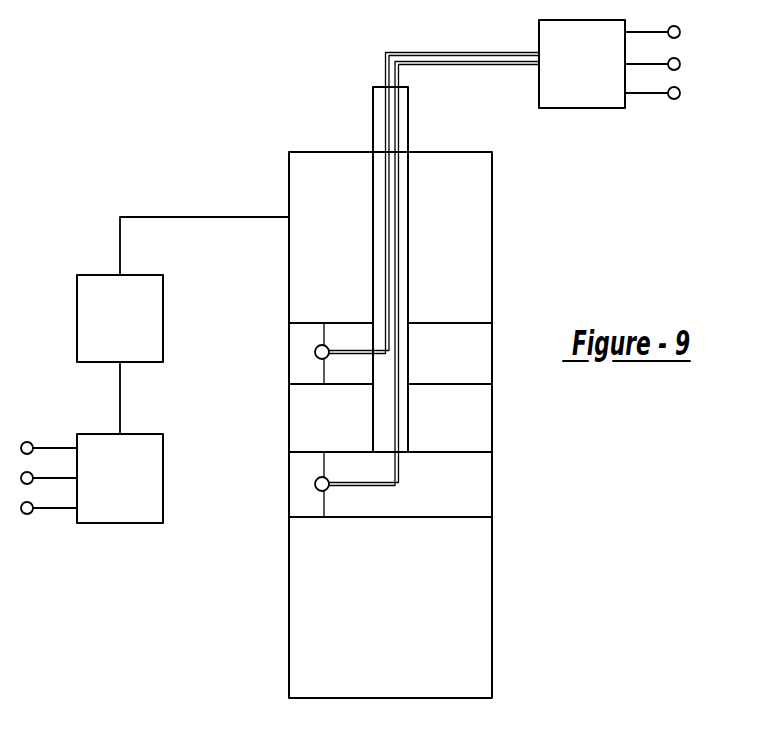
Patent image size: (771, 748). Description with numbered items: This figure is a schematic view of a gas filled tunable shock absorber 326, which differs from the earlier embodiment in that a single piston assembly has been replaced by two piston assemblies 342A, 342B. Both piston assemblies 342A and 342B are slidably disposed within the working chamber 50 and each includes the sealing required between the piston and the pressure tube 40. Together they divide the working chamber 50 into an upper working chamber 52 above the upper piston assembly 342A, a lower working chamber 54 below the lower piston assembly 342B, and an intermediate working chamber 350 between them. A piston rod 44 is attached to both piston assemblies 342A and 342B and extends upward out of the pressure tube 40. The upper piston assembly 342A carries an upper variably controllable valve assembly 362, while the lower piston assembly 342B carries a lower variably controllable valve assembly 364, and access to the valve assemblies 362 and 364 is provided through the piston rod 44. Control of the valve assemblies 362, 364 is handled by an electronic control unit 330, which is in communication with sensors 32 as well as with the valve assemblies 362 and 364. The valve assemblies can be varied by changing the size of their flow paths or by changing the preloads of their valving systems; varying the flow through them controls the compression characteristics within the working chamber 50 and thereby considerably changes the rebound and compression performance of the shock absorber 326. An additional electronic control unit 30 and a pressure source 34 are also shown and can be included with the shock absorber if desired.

The tunable shock absorber 326 is at (188, 125).
The pressure tube 40 is at (492, 548).
The upper working chamber 52 is at (475, 241).
The lower working chamber 54 is at (413, 616).
The piston assembly 342A is at (472, 366).
The piston assembly 342B is at (470, 501).
The piston rod 44 is at (409, 113).
The upper variably controllable valve assembly 362 is at (315, 352).
The lower variably controllable valve assembly 364 is at (315, 484).
The working chamber 50 is at (320, 415).
The intermediate working chamber 350 is at (480, 416).
The electronic control unit 330 is at (590, 78).
The sensors 32 is at (682, 88).
The pressure source 34 is at (128, 328).
The electronic control unit 30 is at (129, 491).